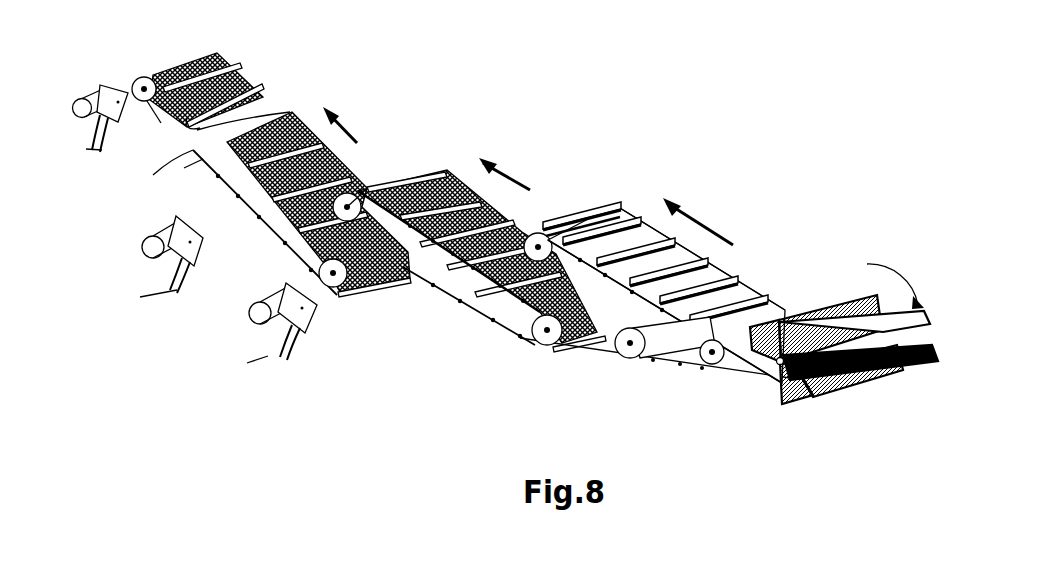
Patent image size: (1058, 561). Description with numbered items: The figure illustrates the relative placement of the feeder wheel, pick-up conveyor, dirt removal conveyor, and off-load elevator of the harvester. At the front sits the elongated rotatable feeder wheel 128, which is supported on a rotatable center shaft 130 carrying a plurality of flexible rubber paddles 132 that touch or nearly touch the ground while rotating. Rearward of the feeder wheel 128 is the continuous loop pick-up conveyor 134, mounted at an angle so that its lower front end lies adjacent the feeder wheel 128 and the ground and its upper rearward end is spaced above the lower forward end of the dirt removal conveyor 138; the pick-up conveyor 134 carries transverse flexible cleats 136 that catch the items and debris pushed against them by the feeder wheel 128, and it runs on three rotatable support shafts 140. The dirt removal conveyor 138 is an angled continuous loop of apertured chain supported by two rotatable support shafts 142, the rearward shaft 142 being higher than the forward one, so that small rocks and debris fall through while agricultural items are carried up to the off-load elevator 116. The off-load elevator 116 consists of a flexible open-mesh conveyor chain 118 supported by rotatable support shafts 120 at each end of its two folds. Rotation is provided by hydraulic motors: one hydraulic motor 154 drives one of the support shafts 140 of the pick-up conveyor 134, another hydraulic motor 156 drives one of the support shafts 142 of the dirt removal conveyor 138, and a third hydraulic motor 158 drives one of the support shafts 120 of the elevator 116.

The off-load elevator 116 is at (350, 168).
The conveyor chain 118 is at (133, 142).
The support shaft 120 is at (144, 89).
The feeder wheel 128 is at (791, 404).
The center shaft 130 is at (777, 363).
The flexible rubber paddles 132 is at (840, 310).
The pick-up conveyor 134 is at (703, 272).
The flexible cleats 136 is at (708, 321).
The dirt removal conveyor 138 is at (540, 244).
The support shafts 140 is at (575, 212).
The support shafts 142 is at (213, 237).
The hydraulic motor 154 is at (256, 333).
The hydraulic motor 156 is at (152, 262).
The hydraulic motor 158 is at (79, 118).